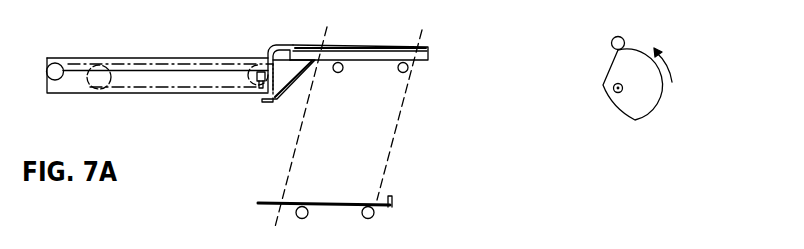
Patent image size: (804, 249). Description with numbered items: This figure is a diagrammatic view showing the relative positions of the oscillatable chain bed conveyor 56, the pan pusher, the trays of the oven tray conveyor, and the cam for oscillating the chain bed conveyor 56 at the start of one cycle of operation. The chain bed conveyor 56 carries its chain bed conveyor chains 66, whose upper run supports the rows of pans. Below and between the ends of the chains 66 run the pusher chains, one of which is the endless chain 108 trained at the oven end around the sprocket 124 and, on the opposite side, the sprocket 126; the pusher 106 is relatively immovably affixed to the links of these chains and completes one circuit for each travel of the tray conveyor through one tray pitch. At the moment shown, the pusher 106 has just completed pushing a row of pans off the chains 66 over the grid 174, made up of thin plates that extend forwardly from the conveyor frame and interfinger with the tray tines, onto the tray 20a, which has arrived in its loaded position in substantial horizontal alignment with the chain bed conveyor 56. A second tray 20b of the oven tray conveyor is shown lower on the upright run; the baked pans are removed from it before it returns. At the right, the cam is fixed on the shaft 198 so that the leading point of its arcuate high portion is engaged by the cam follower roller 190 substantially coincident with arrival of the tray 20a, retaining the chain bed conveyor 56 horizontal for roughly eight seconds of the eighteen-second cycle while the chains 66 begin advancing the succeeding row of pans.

The sprocket 124 is at (99, 65).
The chain bed conveyor 56 is at (166, 57).
The chain bed conveyor chains 66 is at (203, 57).
The pusher 106 is at (280, 47).
The endless chain 108 is at (162, 87).
The sprocket 126 is at (252, 90).
The grid 174 is at (304, 73).
The tray 20a is at (424, 63).
The tray 20b is at (393, 207).
The cam follower roller 190 is at (625, 39).
The shaft 198 is at (653, 100).